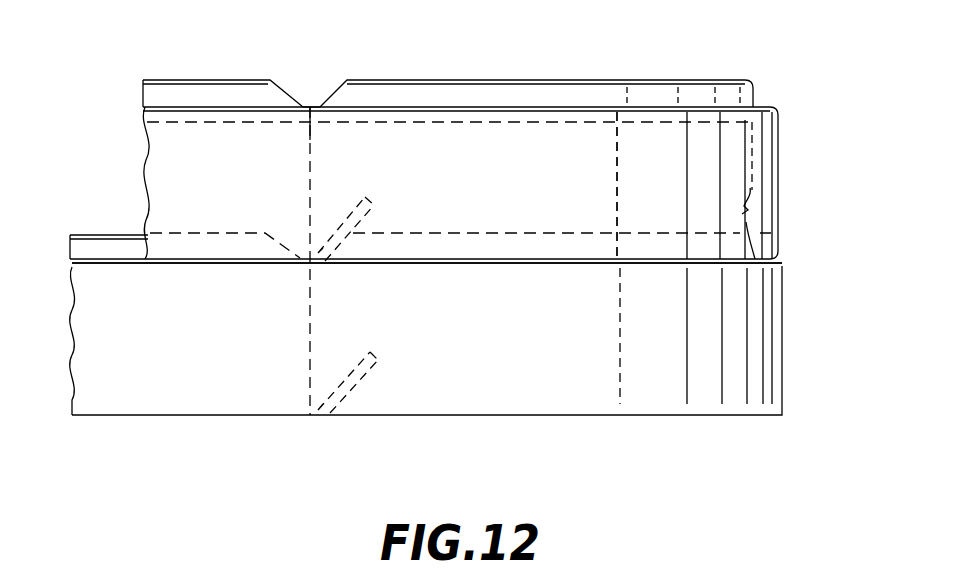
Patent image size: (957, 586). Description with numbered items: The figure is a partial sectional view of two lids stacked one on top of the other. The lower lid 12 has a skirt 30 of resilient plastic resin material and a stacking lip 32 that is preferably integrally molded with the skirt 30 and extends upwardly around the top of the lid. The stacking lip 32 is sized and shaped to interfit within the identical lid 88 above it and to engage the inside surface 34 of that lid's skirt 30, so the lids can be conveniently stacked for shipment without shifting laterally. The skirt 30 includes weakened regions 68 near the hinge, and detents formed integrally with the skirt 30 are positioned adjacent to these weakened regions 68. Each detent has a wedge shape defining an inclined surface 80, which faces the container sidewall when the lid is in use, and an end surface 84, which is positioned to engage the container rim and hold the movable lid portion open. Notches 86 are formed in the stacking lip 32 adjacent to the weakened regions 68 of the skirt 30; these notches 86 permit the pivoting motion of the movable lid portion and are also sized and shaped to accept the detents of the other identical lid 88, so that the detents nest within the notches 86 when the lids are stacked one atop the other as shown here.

The lid 12 is at (580, 393).
The skirt 30 is at (765, 178).
The stacking lip 32 is at (478, 78).
The inside surface 34 is at (762, 221).
The weakened regions 68 is at (309, 138).
The inclined surface 80 is at (350, 392).
The end surface 84 is at (318, 410).
The notches 86 is at (308, 90).
The identical lid 88 is at (642, 127).